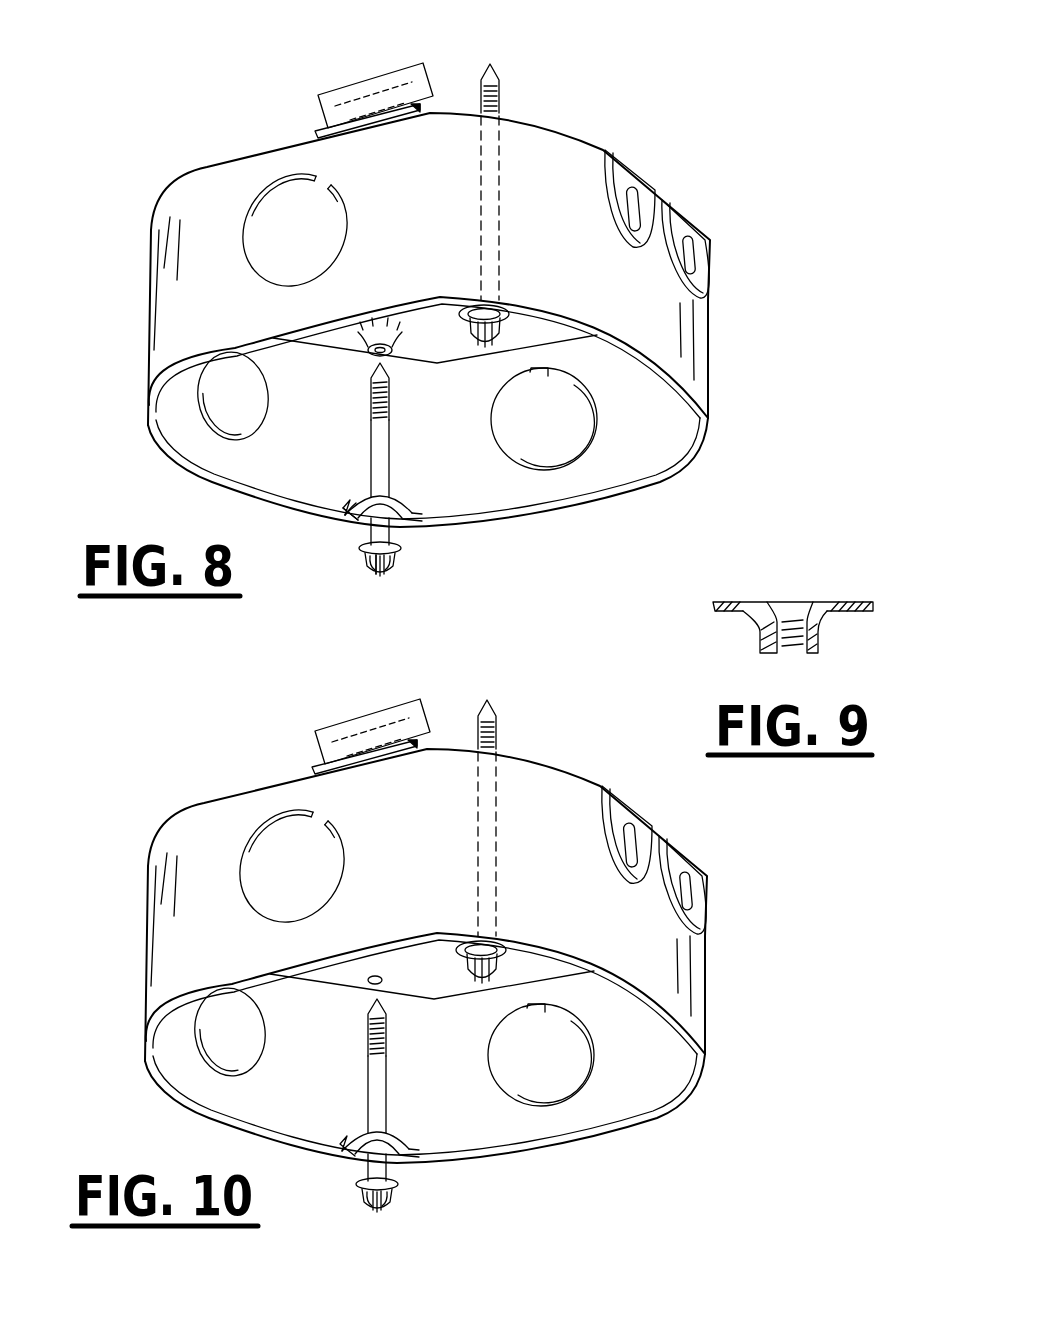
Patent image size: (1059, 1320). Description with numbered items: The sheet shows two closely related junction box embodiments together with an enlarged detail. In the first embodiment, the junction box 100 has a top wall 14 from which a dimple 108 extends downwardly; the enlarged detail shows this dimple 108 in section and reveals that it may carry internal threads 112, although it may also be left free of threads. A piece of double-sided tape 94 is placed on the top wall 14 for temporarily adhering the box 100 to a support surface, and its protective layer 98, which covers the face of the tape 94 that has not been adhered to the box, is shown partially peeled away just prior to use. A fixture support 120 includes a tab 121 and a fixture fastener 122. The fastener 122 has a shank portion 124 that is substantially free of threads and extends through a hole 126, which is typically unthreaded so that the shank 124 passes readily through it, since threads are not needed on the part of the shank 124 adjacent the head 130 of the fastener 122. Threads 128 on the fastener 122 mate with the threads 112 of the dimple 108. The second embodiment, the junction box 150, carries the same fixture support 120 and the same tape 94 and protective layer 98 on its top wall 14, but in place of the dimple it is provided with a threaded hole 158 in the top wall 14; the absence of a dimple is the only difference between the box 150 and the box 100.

In FIG. 8, the top wall 14 is at (205, 157).
In FIG. 9, the top wall 14 is at (730, 594).
In FIG. 10, the top wall 14 is at (408, 956).
In FIG. 8, the double-sided tape 94 is at (300, 118).
In FIG. 10, the double-sided tape 94 is at (300, 750).
In FIG. 8, the protective strip or layer 98 is at (335, 100).
In FIG. 10, the protective strip or layer 98 is at (328, 718).
In FIG. 8, the junction box 100 is at (386, 345).
In FIG. 8, the dimple 108 is at (370, 350).
In FIG. 9, the dimple 108 is at (825, 647).
In FIG. 8, the internal threads 112 is at (370, 362).
In FIG. 9, the internal threads 112 is at (795, 625).
In FIG. 8, the fixture support 120 is at (530, 329).
In FIG. 10, the fixture support 120 is at (493, 1054).
In FIG. 8, the tab 121 is at (360, 520).
In FIG. 8, the fixture fastener 122 is at (408, 576).
In FIG. 10, the fixture fastener 122 is at (428, 1219).
In FIG. 8, the shank portion 124 is at (390, 450).
In FIG. 8, the unthreaded hole 126 is at (352, 503).
In FIG. 8, the threads 128 is at (505, 100).
In FIG. 10, the threads 128 is at (476, 916).
In FIG. 8, the head 130 is at (380, 575).
In FIG. 10, the junction box 150 is at (376, 967).
In FIG. 10, the threaded hole 158 is at (330, 1008).